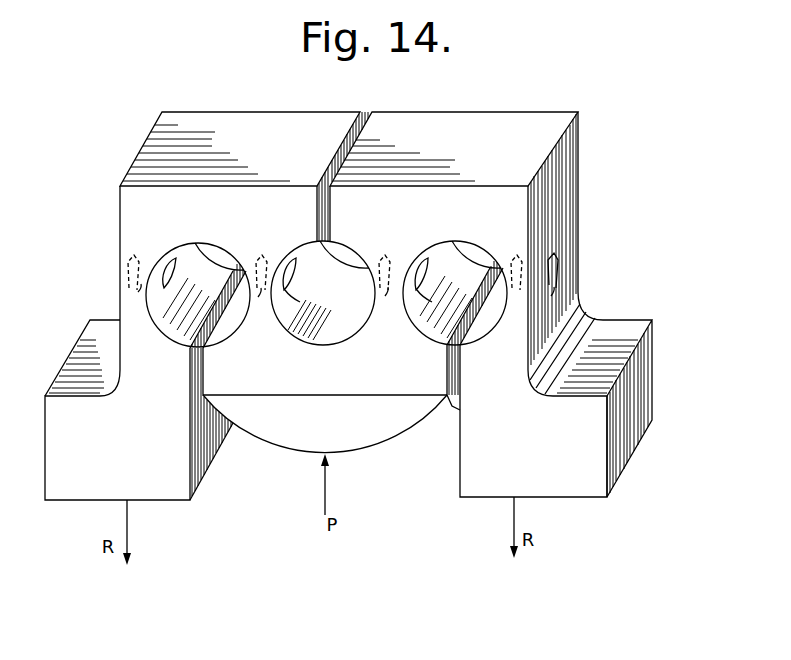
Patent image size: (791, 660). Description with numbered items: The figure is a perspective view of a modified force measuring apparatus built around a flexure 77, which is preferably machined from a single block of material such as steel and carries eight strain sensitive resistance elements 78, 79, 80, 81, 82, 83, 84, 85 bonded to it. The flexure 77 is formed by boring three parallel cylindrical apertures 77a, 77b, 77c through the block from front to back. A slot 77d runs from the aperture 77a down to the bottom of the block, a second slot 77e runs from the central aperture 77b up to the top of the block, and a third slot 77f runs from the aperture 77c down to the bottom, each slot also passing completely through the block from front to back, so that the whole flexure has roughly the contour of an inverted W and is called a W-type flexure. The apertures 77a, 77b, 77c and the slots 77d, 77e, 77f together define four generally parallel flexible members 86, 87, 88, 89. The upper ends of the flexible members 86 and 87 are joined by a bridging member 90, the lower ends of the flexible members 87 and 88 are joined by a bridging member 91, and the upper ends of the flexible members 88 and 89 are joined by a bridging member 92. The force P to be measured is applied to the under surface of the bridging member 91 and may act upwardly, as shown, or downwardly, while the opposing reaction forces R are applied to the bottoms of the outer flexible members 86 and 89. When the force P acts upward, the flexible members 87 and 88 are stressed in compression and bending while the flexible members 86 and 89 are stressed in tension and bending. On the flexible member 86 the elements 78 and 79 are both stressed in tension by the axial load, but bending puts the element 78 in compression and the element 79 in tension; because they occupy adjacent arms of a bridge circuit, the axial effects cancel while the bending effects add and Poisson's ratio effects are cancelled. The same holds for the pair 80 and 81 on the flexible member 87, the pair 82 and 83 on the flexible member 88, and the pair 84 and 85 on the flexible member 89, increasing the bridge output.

The flexure 77 is at (632, 276).
The cylindrical aperture 77a is at (173, 328).
The cylindrical aperture 77b is at (313, 340).
The cylindrical aperture 77c is at (473, 338).
The slot 77d is at (196, 398).
The slot 77e is at (366, 113).
The slot 77f is at (454, 398).
The strain sensitive resistance element 78 is at (126, 270).
The strain sensitive resistance element 79 is at (177, 268).
The strain sensitive resistance element 80 is at (256, 258).
The strain sensitive resistance element 81 is at (323, 293).
The strain sensitive resistance element 82 is at (382, 260).
The strain sensitive resistance element 83 is at (455, 293).
The strain sensitive resistance element 84 is at (512, 260).
The strain sensitive resistance element 85 is at (553, 257).
The flexible member 86 is at (140, 292).
The flexible member 87 is at (260, 298).
The flexible member 88 is at (387, 297).
The flexible member 89 is at (553, 297).
The bridging member 90 is at (173, 205).
The bridging member 91 is at (366, 388).
The bridging member 92 is at (458, 232).